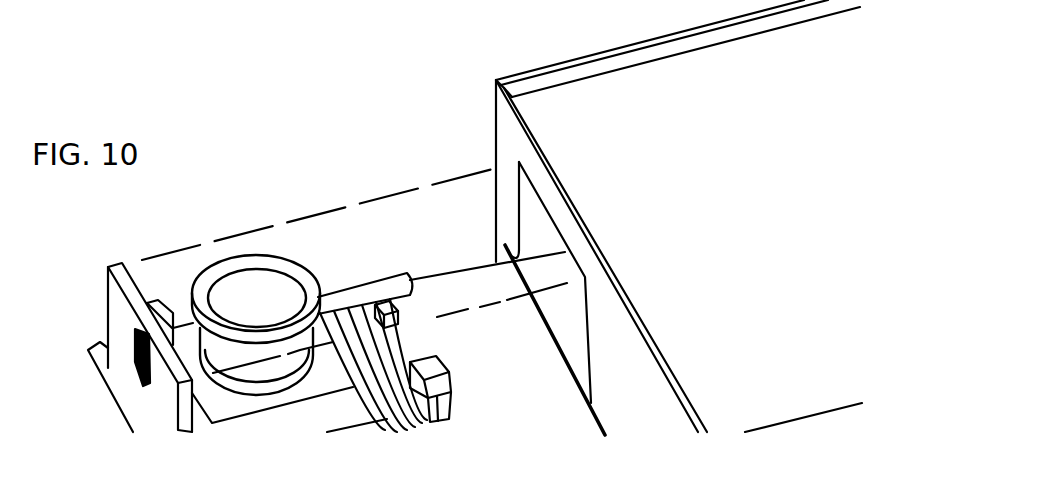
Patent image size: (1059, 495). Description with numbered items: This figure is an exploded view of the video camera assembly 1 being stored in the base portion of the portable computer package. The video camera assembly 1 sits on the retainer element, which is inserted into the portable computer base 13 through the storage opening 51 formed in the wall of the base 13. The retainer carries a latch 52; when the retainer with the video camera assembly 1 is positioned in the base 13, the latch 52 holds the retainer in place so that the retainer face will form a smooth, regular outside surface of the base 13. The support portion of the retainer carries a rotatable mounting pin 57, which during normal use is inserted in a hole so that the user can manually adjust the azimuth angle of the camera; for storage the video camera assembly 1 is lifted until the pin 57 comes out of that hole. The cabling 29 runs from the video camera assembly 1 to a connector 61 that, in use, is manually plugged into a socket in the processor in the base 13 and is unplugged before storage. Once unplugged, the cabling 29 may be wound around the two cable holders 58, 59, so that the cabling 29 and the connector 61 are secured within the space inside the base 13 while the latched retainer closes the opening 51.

The video camera assembly 1 is at (284, 253).
The portable computer base 13 is at (506, 127).
The cable 29 is at (402, 347).
The storage opening 51 is at (588, 352).
The latch 52 is at (108, 302).
The rotatable mounting pin 57 is at (363, 291).
The cable holder 58 is at (392, 307).
The cable holder 59 is at (451, 398).
The connector 61 is at (445, 372).